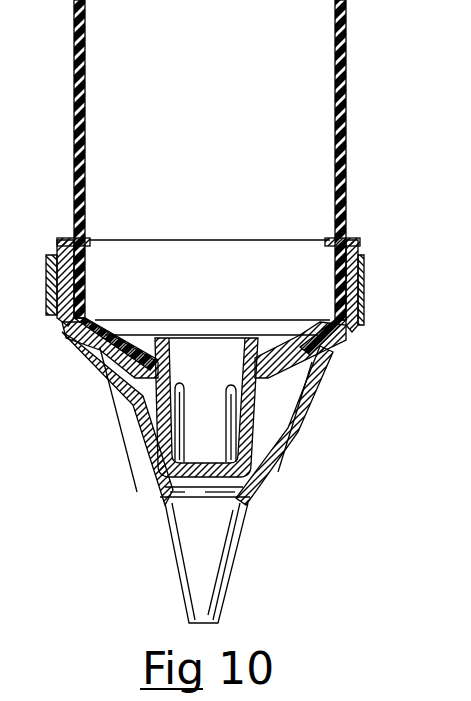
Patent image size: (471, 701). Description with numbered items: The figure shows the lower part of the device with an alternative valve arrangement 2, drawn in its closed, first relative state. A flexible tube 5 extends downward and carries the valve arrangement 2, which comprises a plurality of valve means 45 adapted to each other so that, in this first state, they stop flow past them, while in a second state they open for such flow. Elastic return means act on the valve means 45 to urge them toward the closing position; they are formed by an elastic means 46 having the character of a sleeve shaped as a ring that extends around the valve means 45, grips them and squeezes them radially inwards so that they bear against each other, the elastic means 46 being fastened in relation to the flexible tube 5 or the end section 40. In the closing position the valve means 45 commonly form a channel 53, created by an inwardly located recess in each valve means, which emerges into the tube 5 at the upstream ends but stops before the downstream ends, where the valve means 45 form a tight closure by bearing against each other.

The flexible tube 5 is at (348, 108).
The valve arrangement 2 is at (140, 300).
The channel 53 is at (206, 338).
The valve means 45 is at (230, 383).
The elastic means 46 is at (283, 483).
The end section 40 is at (133, 473).